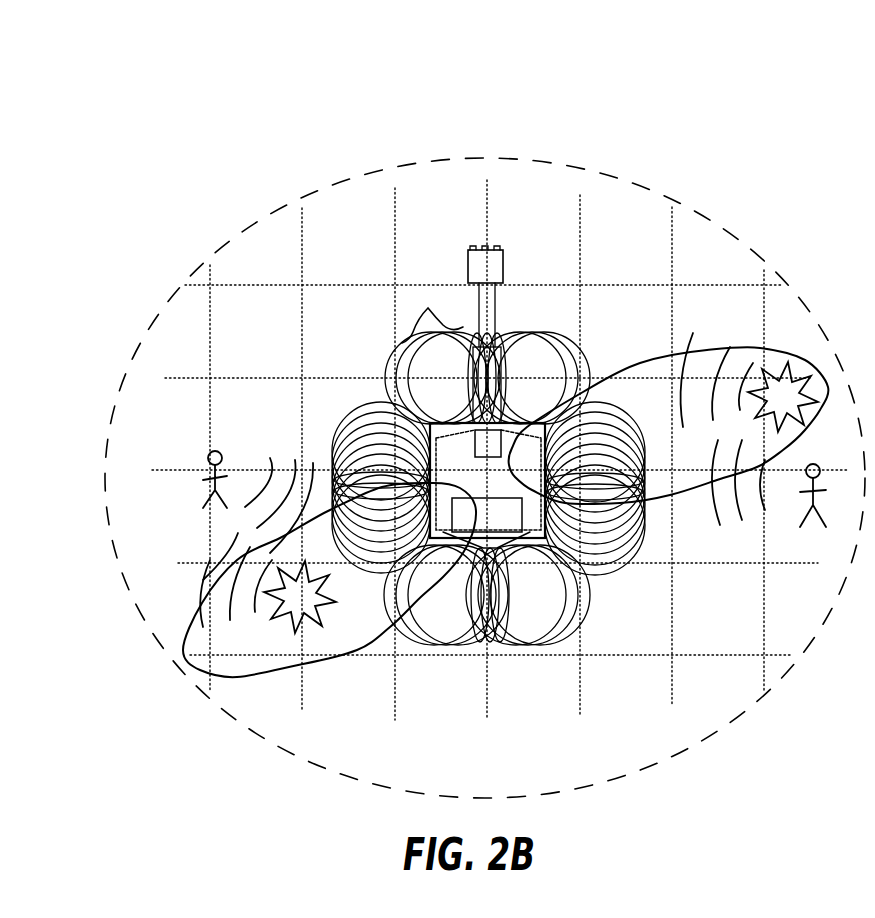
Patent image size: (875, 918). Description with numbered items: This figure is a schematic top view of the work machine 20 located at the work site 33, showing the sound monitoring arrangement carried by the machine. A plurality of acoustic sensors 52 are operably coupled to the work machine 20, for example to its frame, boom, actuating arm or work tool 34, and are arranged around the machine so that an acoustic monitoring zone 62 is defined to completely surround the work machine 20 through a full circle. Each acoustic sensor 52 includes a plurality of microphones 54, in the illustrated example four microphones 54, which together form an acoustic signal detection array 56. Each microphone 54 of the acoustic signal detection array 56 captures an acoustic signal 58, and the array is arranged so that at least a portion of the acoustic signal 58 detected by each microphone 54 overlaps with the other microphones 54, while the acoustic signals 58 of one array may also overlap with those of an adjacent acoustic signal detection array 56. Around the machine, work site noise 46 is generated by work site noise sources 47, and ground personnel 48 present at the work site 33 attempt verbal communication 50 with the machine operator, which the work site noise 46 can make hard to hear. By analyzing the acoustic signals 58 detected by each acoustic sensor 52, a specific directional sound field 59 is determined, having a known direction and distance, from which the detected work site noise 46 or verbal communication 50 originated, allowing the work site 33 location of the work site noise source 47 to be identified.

The work machine 20 is at (777, 165).
The work site 33 is at (342, 262).
The work tool 34 is at (505, 270).
The work site noise 46 is at (207, 581).
The work site noise source 47 is at (327, 606).
The ground personnel 48 is at (208, 456).
The verbal communication 50 is at (260, 487).
The acoustic sensor 52 is at (445, 425).
The microphone 54 is at (545, 520).
The acoustic signal detection array 56 is at (432, 314).
The acoustic signal 58 is at (353, 412).
The directional sound field 59 is at (446, 516).
The acoustic monitoring zone 62 is at (648, 153).